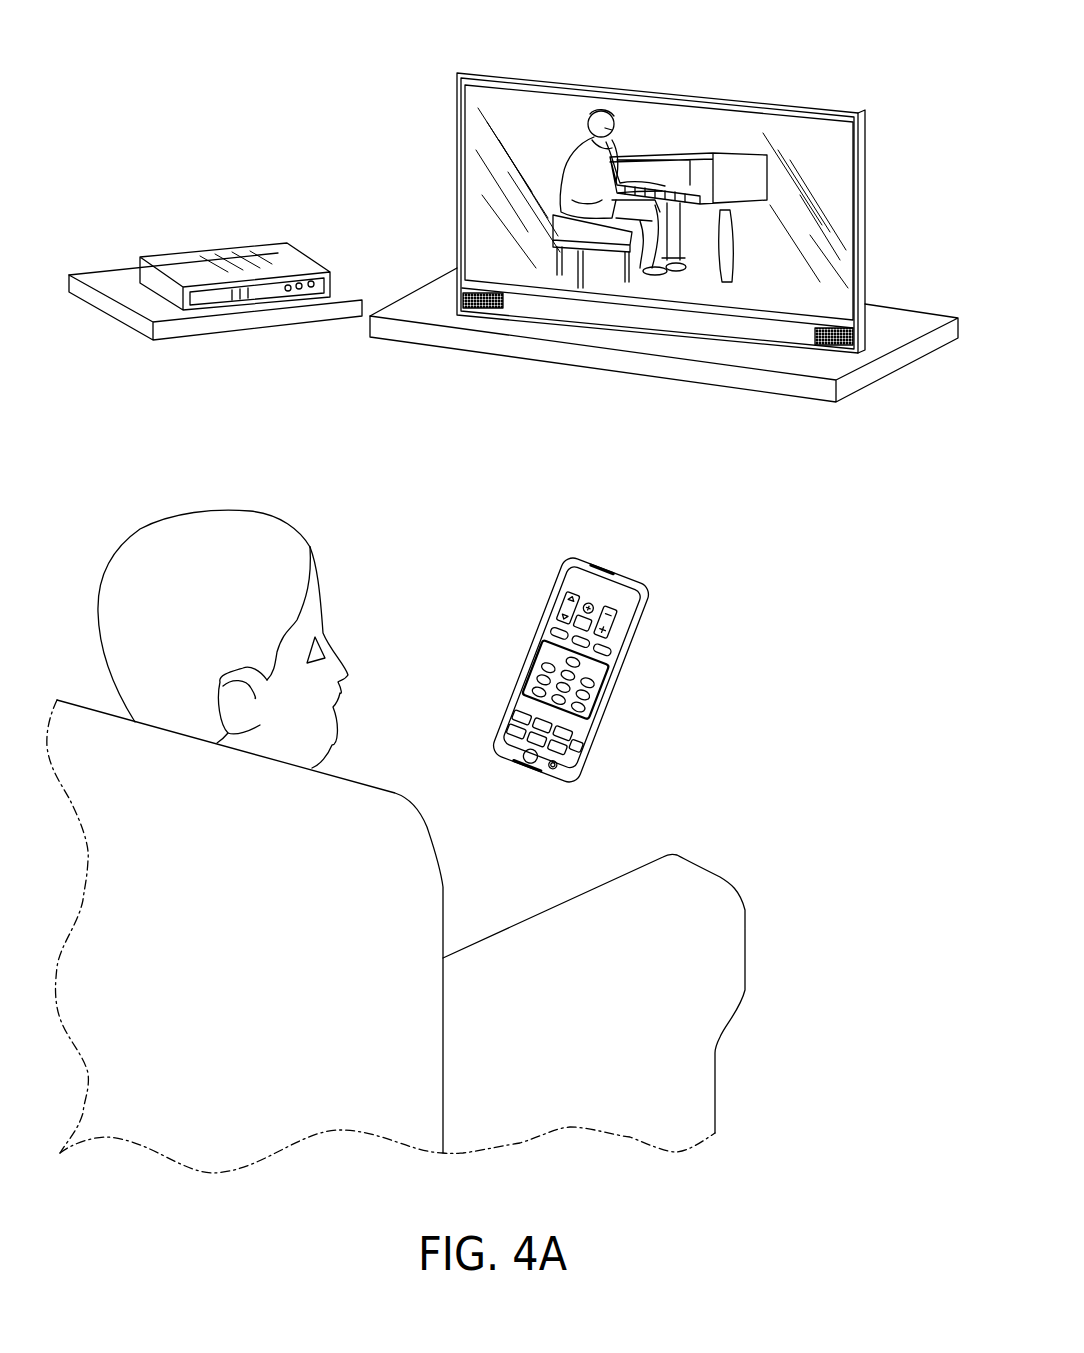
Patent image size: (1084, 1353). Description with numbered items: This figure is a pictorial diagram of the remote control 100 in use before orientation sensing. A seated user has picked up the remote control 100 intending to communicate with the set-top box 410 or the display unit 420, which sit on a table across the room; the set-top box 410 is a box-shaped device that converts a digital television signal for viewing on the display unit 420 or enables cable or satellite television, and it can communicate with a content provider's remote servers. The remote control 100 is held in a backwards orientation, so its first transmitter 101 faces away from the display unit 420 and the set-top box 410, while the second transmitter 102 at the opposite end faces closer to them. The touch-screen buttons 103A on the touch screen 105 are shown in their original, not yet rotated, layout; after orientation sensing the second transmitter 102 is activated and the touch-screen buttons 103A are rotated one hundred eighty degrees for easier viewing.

The remote control 100 is at (658, 625).
The first transmitter 101 is at (517, 765).
The second transmitter 102 is at (618, 576).
The touch-screen buttons 103A is at (580, 710).
The touch screen 105 is at (533, 682).
The set-top box 410 is at (275, 253).
The display unit 420 is at (665, 85).